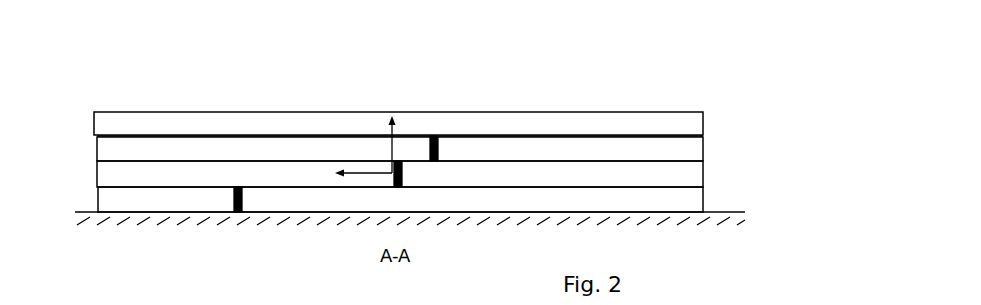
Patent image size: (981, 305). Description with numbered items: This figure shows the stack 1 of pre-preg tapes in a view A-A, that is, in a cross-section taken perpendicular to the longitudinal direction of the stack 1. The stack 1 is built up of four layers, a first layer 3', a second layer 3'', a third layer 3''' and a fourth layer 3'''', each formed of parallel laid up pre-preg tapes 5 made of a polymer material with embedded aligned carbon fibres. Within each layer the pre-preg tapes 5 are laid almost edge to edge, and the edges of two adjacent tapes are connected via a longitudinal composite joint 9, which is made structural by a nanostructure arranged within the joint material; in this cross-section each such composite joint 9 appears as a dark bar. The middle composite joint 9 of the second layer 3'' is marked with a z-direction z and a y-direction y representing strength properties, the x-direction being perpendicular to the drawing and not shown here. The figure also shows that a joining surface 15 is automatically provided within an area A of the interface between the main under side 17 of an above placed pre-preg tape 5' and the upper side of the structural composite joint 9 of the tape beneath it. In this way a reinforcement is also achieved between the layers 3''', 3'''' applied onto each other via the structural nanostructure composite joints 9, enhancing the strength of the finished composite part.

The stack 1 is at (423, 159).
The first layer 3' is at (435, 199).
The second layer 3'' is at (431, 174).
The third layer 3''' is at (430, 149).
The fourth layer 3'''' is at (431, 123).
The pre-preg tape 5 is at (420, 186).
The above placed pre-preg tape 5' is at (413, 144).
The composite joint 9 is at (242, 196).
The joining surface 15 is at (433, 136).
The main under side 17 is at (598, 139).
The area A is at (450, 127).
The y-direction y is at (364, 174).
The z-direction z is at (390, 148).